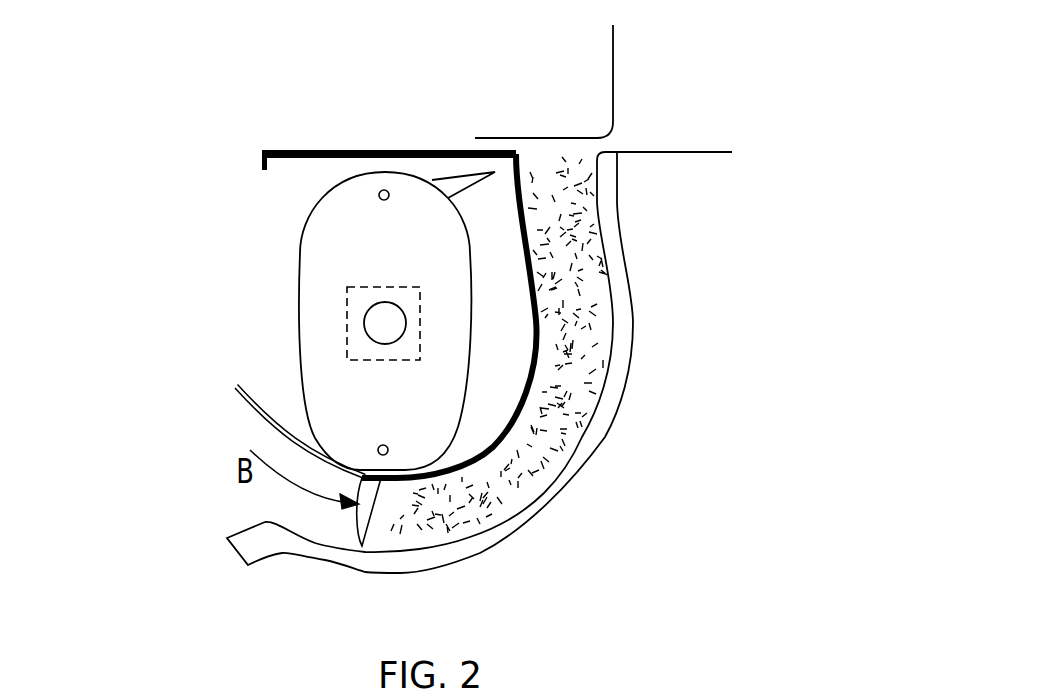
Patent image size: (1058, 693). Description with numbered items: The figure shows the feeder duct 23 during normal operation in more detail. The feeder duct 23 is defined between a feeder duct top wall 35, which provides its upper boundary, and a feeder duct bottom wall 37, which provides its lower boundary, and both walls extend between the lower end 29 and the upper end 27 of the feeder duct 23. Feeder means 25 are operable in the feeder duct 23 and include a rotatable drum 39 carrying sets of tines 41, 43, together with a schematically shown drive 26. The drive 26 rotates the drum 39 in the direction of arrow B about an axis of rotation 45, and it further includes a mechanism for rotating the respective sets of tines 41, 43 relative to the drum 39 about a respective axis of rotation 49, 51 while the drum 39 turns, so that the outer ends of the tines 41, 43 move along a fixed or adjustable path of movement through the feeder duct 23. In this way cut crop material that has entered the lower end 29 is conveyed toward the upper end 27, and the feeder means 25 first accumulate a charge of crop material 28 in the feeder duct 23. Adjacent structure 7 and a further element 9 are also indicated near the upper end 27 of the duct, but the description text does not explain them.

The instrument panel 7 is at (583, 90).
The vehicle interior trim 9 is at (672, 108).
The feeder duct 23 is at (322, 523).
The feeder means 25 is at (262, 262).
The drive 26 is at (360, 350).
The upper end 27 is at (586, 187).
The charge of crop material 28 is at (502, 475).
The lower end 29 is at (230, 495).
The feeder duct top wall 35 is at (534, 307).
The feeder duct bottom wall 37 is at (602, 421).
The rotatable drum 39 is at (352, 200).
The set of tines 41 is at (367, 488).
The set of tines 43 is at (460, 183).
The axis of rotation 45 is at (374, 326).
The axis of rotation 49 is at (384, 445).
The axis of rotation 51 is at (380, 200).